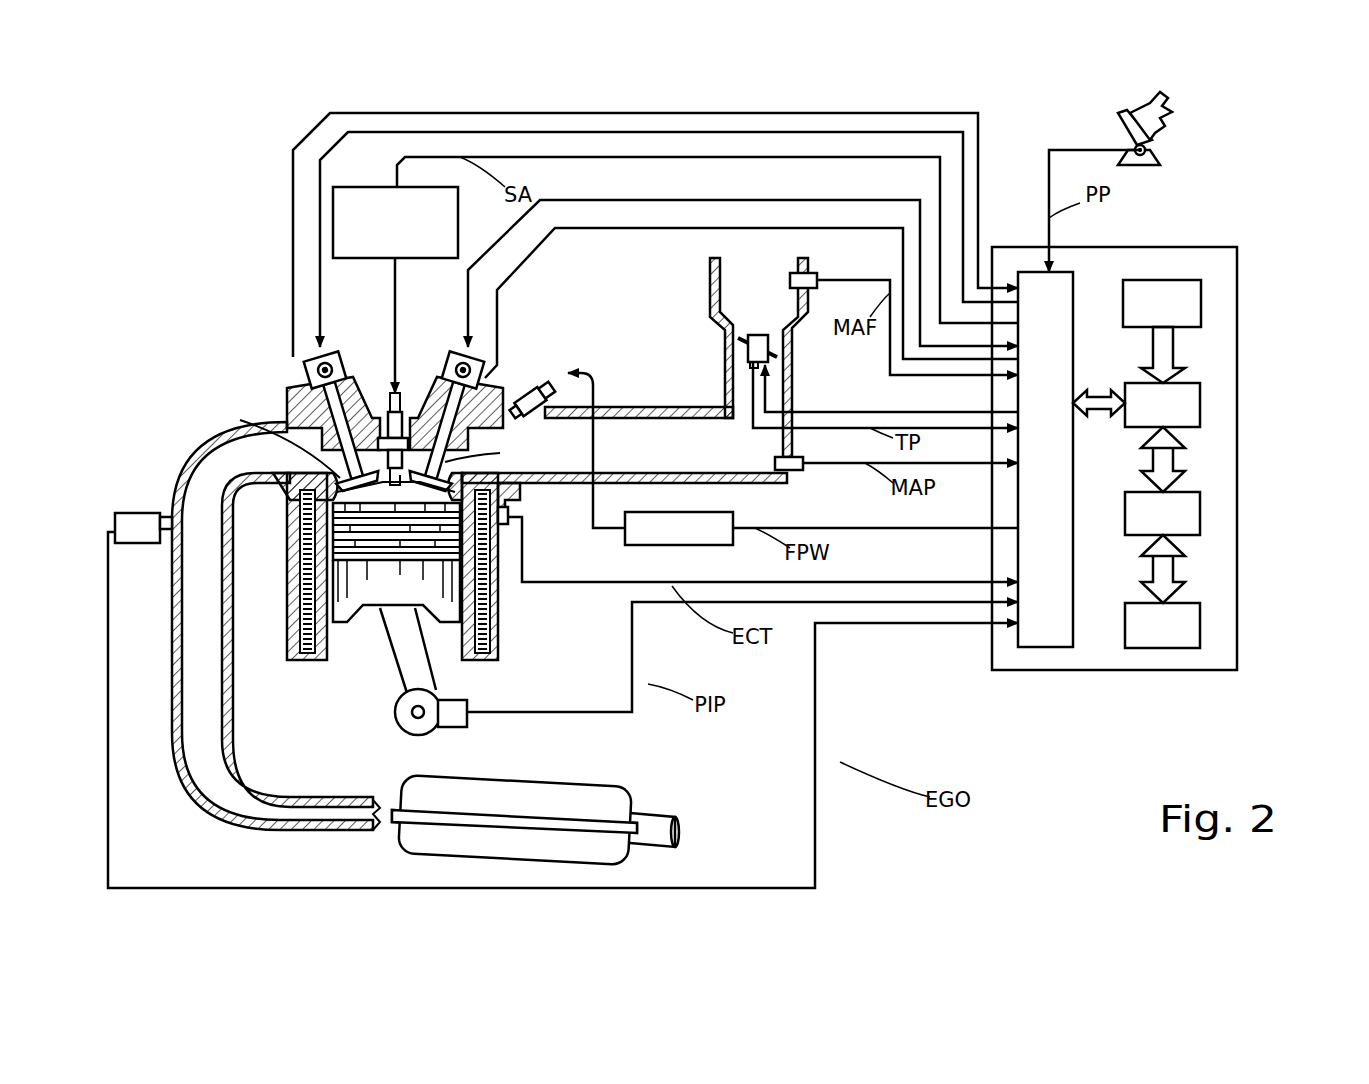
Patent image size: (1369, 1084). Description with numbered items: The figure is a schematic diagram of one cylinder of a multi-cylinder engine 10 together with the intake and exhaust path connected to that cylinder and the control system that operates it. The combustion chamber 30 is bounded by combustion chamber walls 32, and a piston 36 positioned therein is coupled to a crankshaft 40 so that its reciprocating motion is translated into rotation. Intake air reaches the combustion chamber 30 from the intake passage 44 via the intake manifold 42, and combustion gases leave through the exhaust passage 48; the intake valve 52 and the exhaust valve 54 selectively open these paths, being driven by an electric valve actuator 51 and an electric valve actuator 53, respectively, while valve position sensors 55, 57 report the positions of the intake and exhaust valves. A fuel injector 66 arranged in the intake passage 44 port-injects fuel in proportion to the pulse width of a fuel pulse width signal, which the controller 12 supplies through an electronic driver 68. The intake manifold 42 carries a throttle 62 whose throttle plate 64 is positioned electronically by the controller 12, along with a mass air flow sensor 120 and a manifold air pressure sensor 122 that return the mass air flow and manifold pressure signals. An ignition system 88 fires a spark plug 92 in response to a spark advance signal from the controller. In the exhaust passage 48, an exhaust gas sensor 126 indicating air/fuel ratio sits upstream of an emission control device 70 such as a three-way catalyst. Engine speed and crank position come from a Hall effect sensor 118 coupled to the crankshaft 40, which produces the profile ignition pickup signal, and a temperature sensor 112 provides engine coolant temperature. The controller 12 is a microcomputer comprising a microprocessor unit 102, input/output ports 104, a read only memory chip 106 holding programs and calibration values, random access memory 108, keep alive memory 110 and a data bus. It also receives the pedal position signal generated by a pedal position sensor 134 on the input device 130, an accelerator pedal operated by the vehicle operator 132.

The engine 10 is at (217, 338).
The controller 12 is at (1237, 250).
The combustion chamber 30 is at (395, 492).
The combustion chamber walls 32 is at (332, 643).
The piston 36 is at (397, 595).
The crankshaft 40 is at (400, 732).
The intake manifold 42 is at (759, 357).
The intake passage 44 is at (616, 445).
The exhaust passage 48 is at (276, 625).
The electric valve actuator 51 is at (450, 355).
The intake valve 52 is at (448, 462).
The electric valve actuator 53 is at (332, 352).
The exhaust valve 54 is at (287, 428).
The valve position sensor 55 is at (492, 380).
The valve position sensor 57 is at (300, 378).
The throttle 62 is at (770, 338).
The throttle plate 64 is at (738, 341).
The fuel injector 66 is at (542, 385).
The electronic driver 68 is at (630, 545).
The emission control device 70 is at (587, 786).
The ignition system 88 is at (345, 187).
The spark plug 92 is at (398, 395).
The microprocessor unit 102 is at (1200, 396).
The input/output ports 104 is at (1073, 280).
The read only memory chip 106 is at (1201, 300).
The random access memory 108 is at (1200, 506).
The keep alive memory 110 is at (1200, 616).
The temperature sensor 112 is at (522, 522).
The Hall effect sensor 118 is at (462, 727).
The mass air flow sensor 120 is at (815, 275).
The manifold air pressure sensor 122 is at (803, 470).
The exhaust gas sensor 126 is at (115, 517).
The input device 130 is at (1120, 125).
The vehicle operator 132 is at (1172, 108).
The pedal position sensor 134 is at (1165, 150).